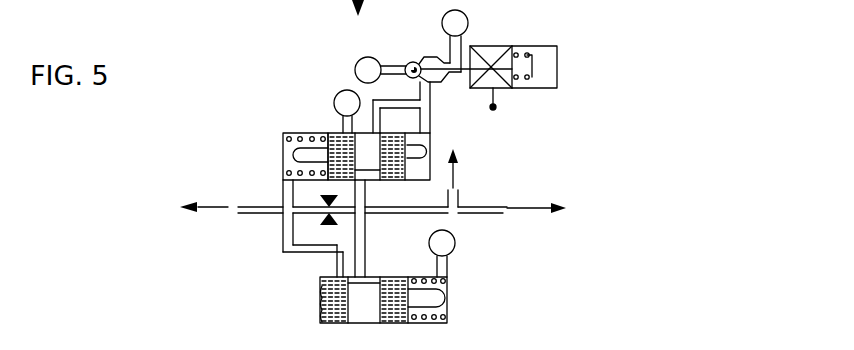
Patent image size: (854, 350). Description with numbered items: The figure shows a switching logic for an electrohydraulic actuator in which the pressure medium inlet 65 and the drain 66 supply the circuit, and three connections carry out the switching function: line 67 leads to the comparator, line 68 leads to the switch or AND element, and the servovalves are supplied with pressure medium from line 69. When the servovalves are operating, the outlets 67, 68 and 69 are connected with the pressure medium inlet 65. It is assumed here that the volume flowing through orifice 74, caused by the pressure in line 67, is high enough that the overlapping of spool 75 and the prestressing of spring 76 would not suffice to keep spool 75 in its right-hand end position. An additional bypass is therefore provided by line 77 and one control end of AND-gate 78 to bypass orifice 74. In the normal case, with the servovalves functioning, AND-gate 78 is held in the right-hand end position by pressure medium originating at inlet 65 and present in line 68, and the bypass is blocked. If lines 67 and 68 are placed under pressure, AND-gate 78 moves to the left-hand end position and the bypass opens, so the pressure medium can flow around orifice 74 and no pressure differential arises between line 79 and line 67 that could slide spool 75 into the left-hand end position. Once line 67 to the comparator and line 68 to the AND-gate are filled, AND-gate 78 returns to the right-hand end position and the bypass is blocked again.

The pressure medium inlet 65 is at (459, 18).
The drain 66 is at (362, 62).
The line 67 is at (219, 207).
The line 68 is at (452, 172).
The line 69 is at (526, 213).
The orifice 74 is at (324, 222).
The spool 75 is at (418, 152).
The spring 76 is at (283, 139).
The line 77 is at (360, 258).
The AND-gate 78 is at (427, 295).
The line 79 is at (428, 92).